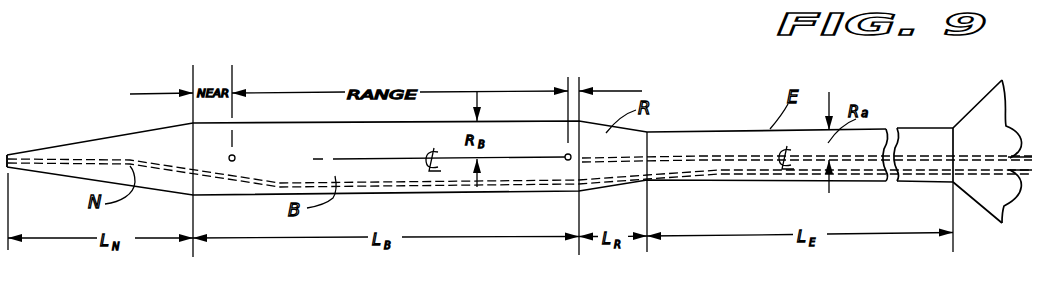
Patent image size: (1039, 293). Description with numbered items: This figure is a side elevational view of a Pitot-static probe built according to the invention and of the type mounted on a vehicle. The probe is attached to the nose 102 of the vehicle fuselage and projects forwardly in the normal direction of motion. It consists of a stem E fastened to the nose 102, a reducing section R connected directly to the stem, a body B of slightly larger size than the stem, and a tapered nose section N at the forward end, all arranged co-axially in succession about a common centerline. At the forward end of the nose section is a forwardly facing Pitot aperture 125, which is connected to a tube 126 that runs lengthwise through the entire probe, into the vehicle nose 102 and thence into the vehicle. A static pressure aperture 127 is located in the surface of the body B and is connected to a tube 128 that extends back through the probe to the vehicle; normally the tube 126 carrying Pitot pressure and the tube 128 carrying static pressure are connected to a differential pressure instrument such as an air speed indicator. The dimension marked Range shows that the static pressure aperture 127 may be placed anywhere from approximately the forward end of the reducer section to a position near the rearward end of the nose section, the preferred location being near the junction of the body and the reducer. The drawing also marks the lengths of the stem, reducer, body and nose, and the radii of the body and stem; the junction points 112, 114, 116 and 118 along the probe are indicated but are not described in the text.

The nose 102 is at (966, 122).
The nose tip point 112 is at (8, 218).
The nose-body junction 114 is at (193, 222).
The body aft transition 116 is at (580, 216).
The aft section start 118 is at (649, 210).
The Pitot aperture 125 is at (6, 156).
The tube 126 is at (78, 164).
The static pressure aperture 127 is at (236, 154).
The tube 128 is at (627, 157).